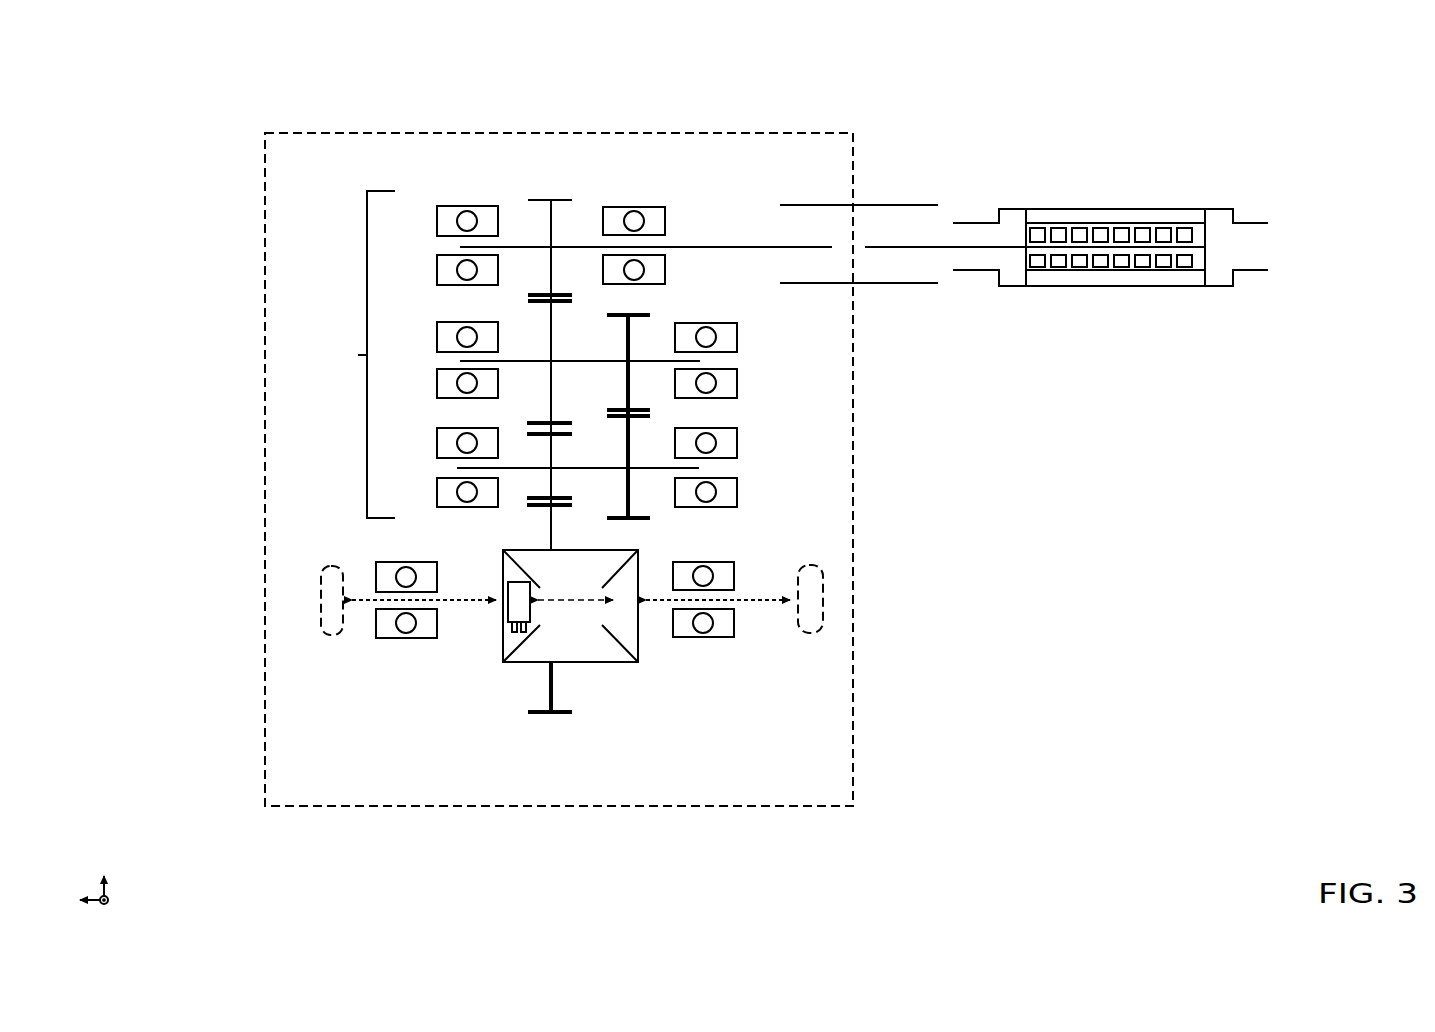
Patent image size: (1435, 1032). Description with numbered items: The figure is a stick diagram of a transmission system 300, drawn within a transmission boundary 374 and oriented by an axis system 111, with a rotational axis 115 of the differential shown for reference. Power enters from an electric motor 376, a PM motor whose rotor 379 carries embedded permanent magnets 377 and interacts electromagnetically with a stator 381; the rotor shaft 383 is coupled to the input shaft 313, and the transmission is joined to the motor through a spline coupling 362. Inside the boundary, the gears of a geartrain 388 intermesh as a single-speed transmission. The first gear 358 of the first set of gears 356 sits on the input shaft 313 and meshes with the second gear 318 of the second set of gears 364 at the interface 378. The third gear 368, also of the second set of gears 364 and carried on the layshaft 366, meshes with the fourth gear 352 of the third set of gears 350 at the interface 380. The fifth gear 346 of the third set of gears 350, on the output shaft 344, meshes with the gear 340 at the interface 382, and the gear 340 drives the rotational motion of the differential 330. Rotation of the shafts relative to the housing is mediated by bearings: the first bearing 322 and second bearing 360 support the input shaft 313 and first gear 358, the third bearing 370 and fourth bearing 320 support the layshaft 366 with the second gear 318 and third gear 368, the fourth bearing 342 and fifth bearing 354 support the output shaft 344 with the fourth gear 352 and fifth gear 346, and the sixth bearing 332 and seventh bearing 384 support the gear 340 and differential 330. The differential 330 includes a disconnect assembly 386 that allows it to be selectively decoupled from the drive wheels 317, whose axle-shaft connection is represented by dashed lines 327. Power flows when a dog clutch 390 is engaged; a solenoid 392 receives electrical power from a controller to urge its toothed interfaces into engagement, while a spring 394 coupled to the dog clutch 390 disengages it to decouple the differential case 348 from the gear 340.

The transmission system 300 is at (1292, 95).
The transmission boundary 374 is at (753, 133).
The geartrain 388 is at (358, 355).
The first bearing 322 is at (480, 206).
The fourth bearing 320 is at (437, 337).
The fourth bearing 342 is at (437, 443).
The second bearing 360 is at (632, 207).
The third bearing 370 is at (737, 327).
The fifth bearing 354 is at (737, 450).
The first gear 358 is at (553, 227).
The second gear 318 is at (553, 353).
The third gear 368 is at (628, 358).
The fourth gear 352 is at (628, 498).
The input shaft 313 is at (700, 247).
The layshaft 366 is at (660, 360).
The output shaft 344 is at (590, 468).
The first set of gears 356 is at (747, 228).
The second set of gears 364 is at (522, 354).
The interface of the first gear and the second gear 378 is at (580, 298).
The third set of gears 350 is at (516, 458).
The interface of the third gear and the fourth gear 380 is at (658, 412).
The fifth gear 346 is at (553, 488).
The interface of the fifth gear and the gear 382 is at (578, 508).
The differential case 348 is at (638, 663).
The rotational axis 115 is at (577, 597).
The solenoid 392 is at (510, 628).
The spring 394 is at (524, 630).
The dog clutch 390 is at (503, 590).
The disconnect assembly 386 is at (522, 576).
The gear 340 is at (540, 714).
The differential 330 is at (603, 689).
The sixth bearing 332 is at (376, 577).
The seventh bearing 384 is at (734, 625).
The dashed lines 327 is at (462, 598).
The drive wheels 317 is at (332, 636).
The spline coupling 362 is at (892, 284).
The rotor shaft 383 is at (1035, 231).
The electric motor 376 is at (1146, 197).
The stator 381 is at (1117, 208).
The rotor 379 is at (1210, 238).
The permanent magnets 377 is at (1188, 261).
The axis system 111 is at (104, 852).